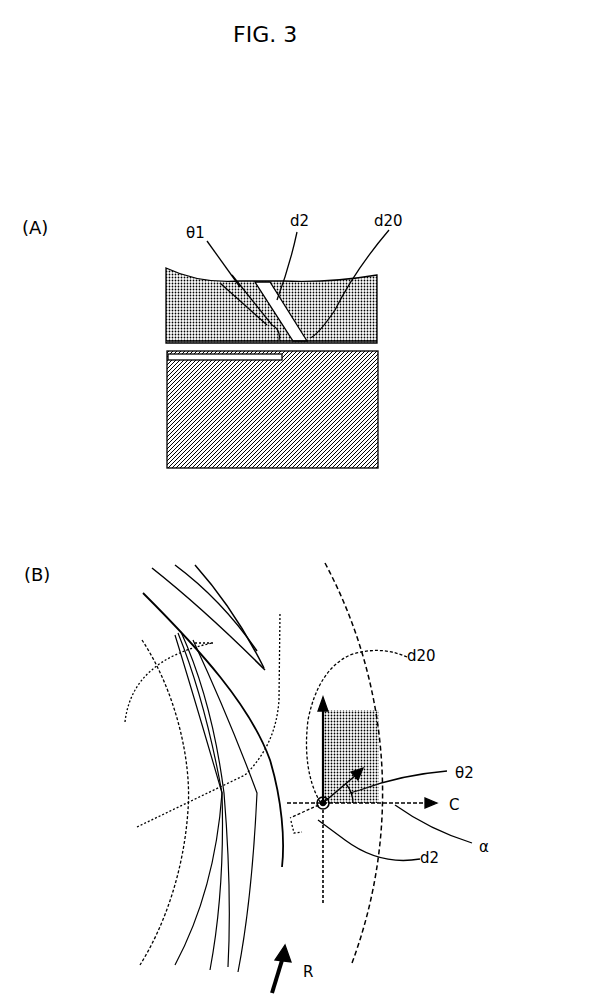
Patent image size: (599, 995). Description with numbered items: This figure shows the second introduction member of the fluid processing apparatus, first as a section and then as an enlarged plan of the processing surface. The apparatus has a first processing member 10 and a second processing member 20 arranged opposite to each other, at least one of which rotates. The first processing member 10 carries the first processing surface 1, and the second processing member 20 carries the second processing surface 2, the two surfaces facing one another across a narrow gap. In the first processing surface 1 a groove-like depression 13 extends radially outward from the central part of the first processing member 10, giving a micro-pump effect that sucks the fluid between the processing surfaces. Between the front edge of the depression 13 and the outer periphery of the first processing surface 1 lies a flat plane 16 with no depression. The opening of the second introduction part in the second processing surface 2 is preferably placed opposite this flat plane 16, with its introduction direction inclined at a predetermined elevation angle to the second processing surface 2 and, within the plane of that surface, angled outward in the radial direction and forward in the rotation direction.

The first processing surface 1 is at (323, 350).
The second processing surface 2 is at (217, 339).
The first processing member 10 is at (170, 413).
The groove-like depression 13 is at (187, 361).
The flat plane 16 is at (195, 726).
The second processing member 20 is at (167, 301).